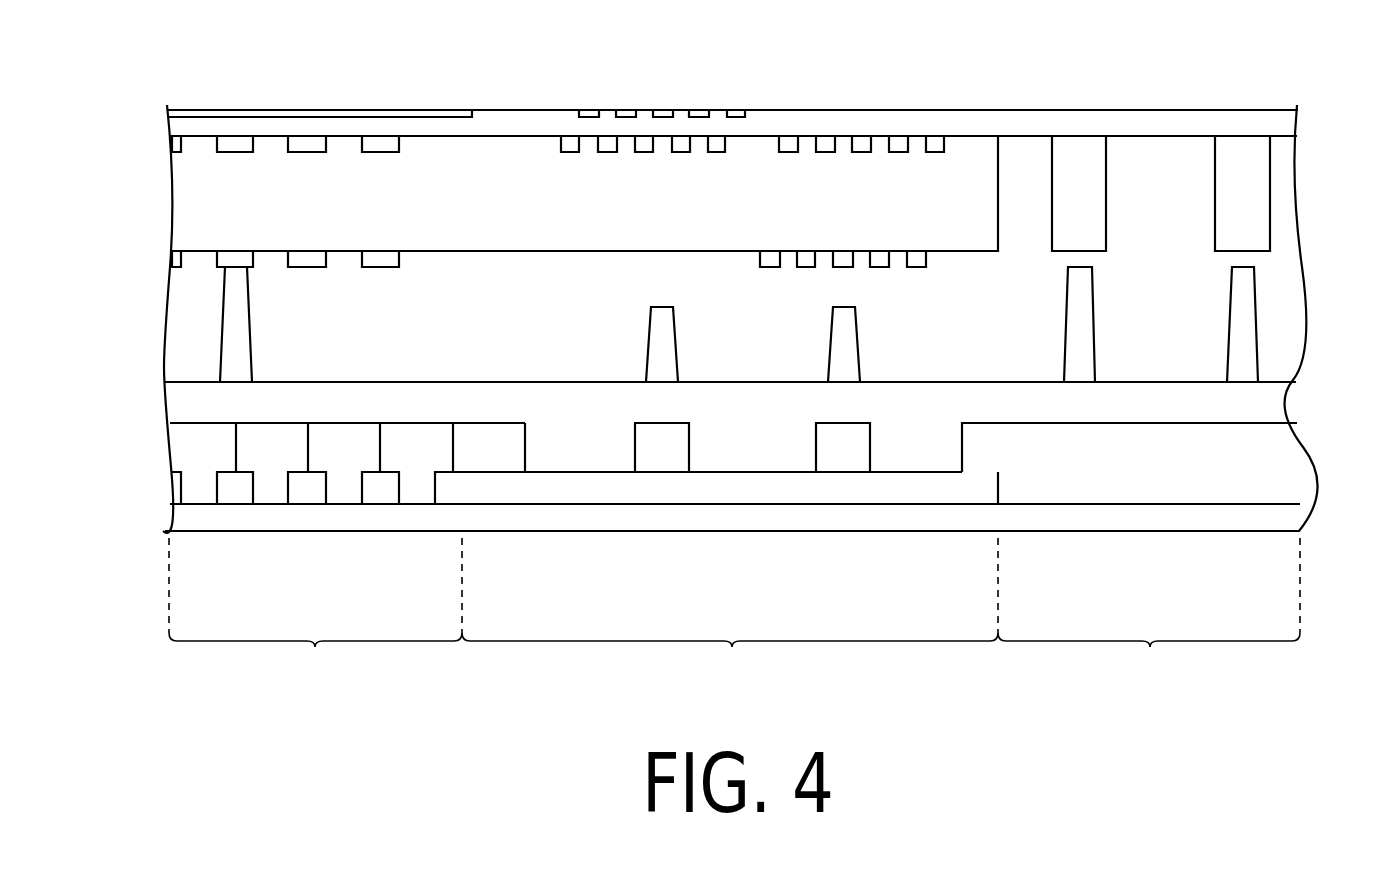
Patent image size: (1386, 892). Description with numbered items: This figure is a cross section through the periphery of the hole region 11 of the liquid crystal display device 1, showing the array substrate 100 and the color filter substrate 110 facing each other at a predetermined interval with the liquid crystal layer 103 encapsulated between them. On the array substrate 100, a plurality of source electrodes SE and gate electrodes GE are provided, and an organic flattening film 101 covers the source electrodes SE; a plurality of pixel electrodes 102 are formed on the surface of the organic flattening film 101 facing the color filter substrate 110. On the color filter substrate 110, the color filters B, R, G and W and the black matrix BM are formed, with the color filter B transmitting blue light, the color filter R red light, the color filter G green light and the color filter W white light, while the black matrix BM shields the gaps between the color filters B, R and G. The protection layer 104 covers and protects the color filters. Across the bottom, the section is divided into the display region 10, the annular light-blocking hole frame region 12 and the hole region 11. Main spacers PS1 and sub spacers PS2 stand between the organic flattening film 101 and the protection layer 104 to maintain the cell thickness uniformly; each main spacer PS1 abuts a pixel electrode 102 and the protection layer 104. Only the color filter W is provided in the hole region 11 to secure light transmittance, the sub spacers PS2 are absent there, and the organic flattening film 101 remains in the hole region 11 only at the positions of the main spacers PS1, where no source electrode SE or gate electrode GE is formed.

The display device 1 is at (1296, 85).
The display region 10 is at (315, 612).
The hole region 11 is at (1149, 612).
The hole frame region 12 is at (730, 612).
The array substrate 100 is at (930, 125).
The organic flattening film 101 is at (183, 197).
The pixel electrode 102 is at (308, 262).
The liquid crystal layer 103 is at (183, 316).
The protection layer 104 is at (183, 399).
The color filter substrate 110 is at (1283, 518).
The source electrode SE is at (237, 143).
The gate electrode GE is at (435, 113).
The main spacer PS1 is at (240, 334).
The sub spacer PS2 is at (658, 334).
The color filter W is at (684, 441).
The black matrix BM is at (235, 497).
The color filter B is at (200, 490).
The color filter R is at (272, 490).
The color filter G is at (345, 490).